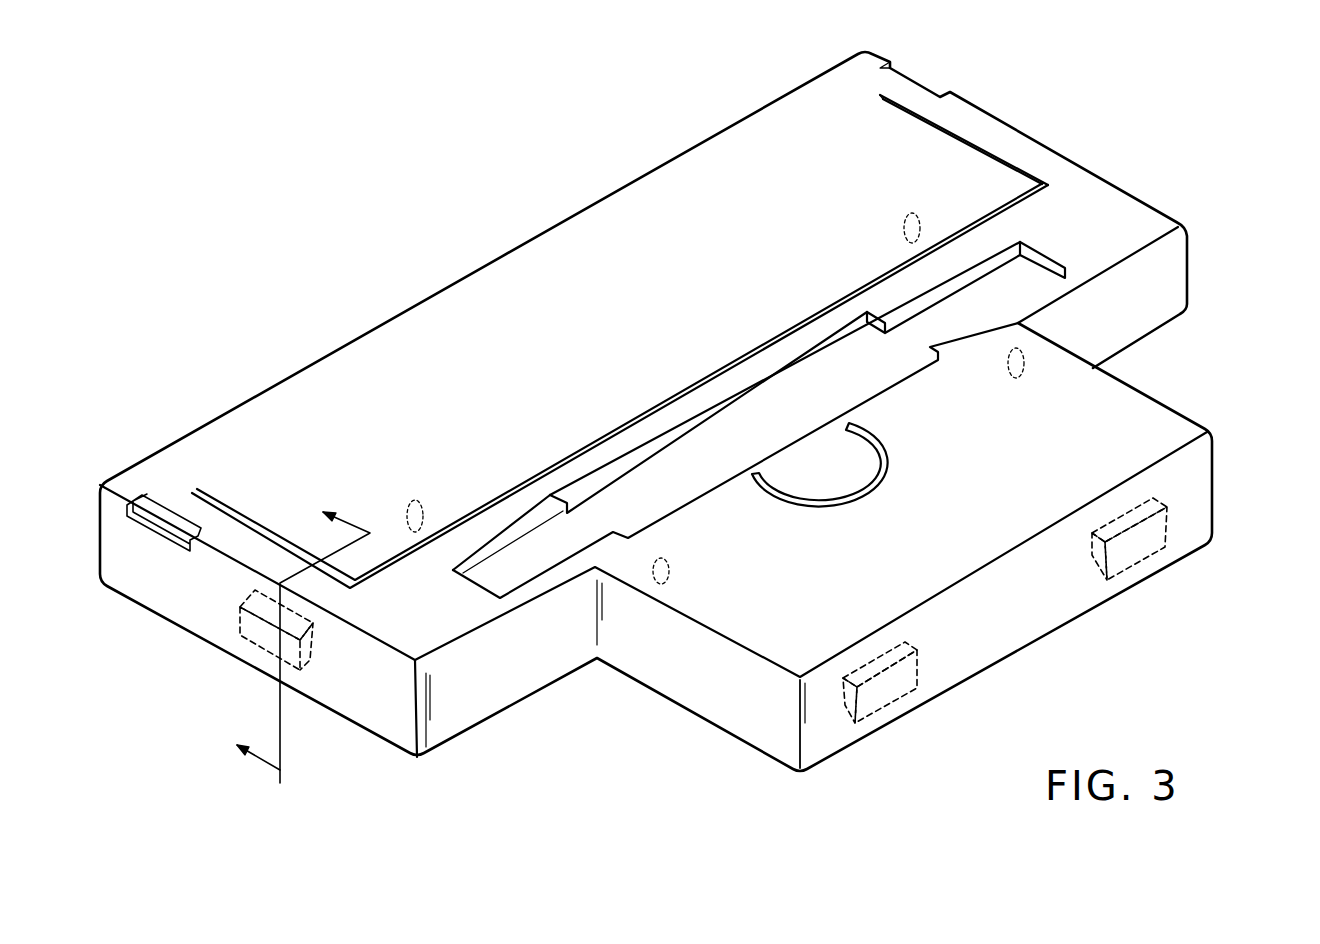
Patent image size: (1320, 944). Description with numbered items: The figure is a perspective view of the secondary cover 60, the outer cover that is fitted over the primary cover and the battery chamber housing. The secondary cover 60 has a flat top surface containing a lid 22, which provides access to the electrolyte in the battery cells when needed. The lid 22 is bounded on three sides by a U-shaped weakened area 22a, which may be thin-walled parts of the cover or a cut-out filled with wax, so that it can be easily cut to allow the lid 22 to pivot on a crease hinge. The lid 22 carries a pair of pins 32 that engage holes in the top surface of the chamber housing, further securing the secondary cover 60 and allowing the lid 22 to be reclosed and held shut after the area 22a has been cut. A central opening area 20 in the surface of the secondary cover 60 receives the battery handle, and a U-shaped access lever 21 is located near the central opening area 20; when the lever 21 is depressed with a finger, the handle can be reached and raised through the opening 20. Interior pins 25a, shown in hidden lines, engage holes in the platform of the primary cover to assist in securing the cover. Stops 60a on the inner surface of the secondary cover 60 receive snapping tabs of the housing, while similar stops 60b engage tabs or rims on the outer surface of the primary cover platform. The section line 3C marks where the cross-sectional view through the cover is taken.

The secondary cover 60 is at (460, 265).
The central opening area 20 is at (1017, 282).
The lid 22 is at (765, 245).
The U-shaped weakened area 22a is at (967, 145).
The access lever 21 is at (877, 492).
The pins 32 is at (425, 501).
The interior pins 25a is at (670, 571).
The stops 60a is at (262, 640).
The stops 60b is at (1157, 538).
The section line 3C is at (291, 631).